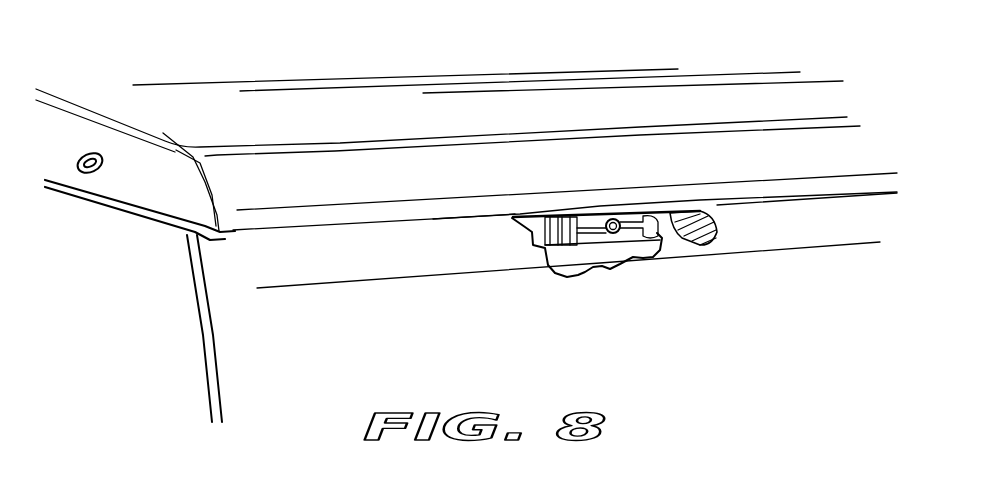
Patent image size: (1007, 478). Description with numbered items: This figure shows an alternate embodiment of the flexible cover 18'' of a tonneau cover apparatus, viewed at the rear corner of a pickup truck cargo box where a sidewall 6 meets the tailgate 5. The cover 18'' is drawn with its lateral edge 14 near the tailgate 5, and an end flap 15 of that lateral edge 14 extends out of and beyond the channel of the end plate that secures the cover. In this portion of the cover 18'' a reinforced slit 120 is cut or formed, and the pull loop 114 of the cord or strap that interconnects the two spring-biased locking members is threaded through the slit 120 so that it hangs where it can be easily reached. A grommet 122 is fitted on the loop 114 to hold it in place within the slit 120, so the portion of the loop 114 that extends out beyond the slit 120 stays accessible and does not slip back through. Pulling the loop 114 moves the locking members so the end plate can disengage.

The flexible cover 18'' is at (448, 131).
The sidewall 6 is at (121, 314).
The tailgate 5 is at (312, 371).
The lateral edge 14 is at (586, 255).
The end flap 15 is at (622, 258).
The slit 120 is at (565, 218).
The grommet 122 is at (612, 219).
The loop 114 is at (710, 240).